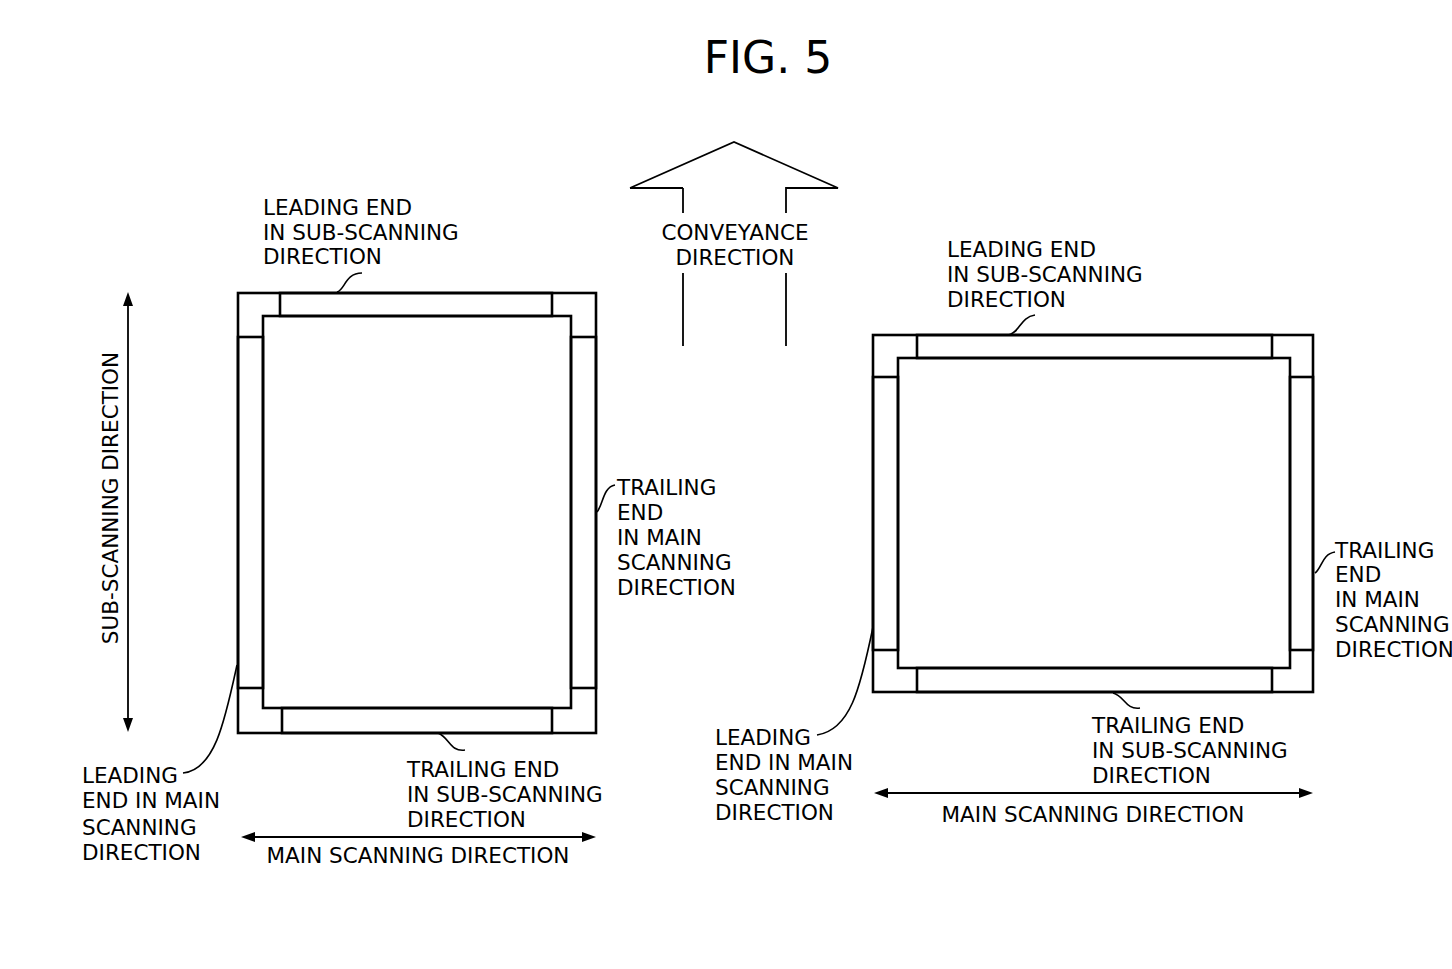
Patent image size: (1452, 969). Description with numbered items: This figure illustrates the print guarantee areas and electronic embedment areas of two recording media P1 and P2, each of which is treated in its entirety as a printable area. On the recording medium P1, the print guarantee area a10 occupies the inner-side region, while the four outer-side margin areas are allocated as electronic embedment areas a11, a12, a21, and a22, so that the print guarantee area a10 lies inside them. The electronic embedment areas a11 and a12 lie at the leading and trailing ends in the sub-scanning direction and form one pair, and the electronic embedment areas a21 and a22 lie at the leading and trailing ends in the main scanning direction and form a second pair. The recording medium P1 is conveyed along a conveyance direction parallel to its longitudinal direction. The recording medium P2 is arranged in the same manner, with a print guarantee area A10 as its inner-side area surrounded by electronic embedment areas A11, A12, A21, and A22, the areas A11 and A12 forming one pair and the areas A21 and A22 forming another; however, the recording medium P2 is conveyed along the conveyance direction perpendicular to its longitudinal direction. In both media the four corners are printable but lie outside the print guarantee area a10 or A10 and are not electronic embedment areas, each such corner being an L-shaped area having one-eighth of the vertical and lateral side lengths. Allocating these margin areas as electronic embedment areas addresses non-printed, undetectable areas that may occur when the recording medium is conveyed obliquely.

The recording medium P1 is at (596, 667).
The print guarantee area a10 is at (510, 348).
The electronic embedment area a11 is at (477, 307).
The electronic embedment area a12 is at (347, 727).
The electronic embedment area a21 is at (252, 383).
The electronic embedment area a22 is at (588, 383).
The recording medium P2 is at (1316, 670).
The print guarantee area A10 is at (1197, 380).
The electronic embedment area A11 is at (1143, 348).
The electronic embedment area A12 is at (1023, 682).
The electronic embedment area A21 is at (888, 460).
The electronic embedment area A22 is at (1305, 487).